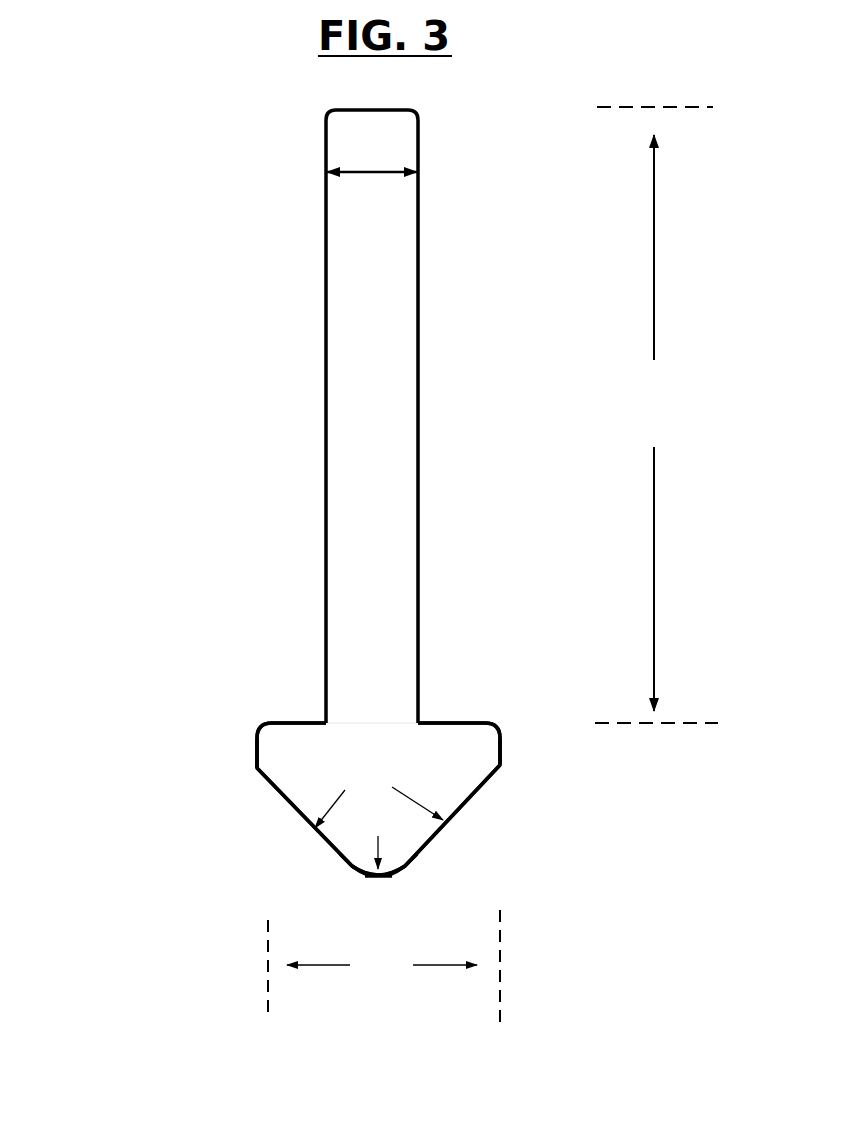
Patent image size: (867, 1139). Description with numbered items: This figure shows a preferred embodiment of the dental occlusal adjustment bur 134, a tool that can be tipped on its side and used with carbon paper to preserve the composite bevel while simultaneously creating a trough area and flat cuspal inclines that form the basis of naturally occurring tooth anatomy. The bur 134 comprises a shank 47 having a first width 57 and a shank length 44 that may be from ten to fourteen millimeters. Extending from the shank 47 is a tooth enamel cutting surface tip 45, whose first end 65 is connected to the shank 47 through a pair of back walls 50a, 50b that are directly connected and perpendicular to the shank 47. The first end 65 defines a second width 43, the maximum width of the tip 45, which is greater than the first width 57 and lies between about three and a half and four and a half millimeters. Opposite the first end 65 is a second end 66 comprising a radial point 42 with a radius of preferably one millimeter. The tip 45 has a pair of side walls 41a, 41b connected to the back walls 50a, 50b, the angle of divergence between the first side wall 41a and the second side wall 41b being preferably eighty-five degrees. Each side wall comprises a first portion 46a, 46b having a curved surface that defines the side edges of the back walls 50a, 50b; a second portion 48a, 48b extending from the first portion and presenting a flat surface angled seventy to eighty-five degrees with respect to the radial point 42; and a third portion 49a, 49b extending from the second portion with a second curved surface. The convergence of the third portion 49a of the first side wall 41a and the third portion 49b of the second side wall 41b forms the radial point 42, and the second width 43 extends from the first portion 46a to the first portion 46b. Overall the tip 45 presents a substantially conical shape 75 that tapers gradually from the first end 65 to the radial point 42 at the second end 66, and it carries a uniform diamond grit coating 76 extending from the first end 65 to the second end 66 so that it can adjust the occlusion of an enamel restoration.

The occlusal adjustment bur 134 is at (384, 566).
The shank 47 is at (348, 483).
The first width 57 is at (372, 154).
The shank length 44 is at (656, 415).
The second width 43 is at (384, 967).
The first end 65 is at (382, 712).
The back wall 50a is at (305, 718).
The back wall 50b is at (443, 723).
The first portion 46a is at (255, 740).
The first portion 46b is at (500, 738).
The second portion 48a is at (278, 808).
The second portion 48b is at (477, 792).
The third portion 49a is at (350, 872).
The third portion 49b is at (403, 870).
The tooth enamel cutting surface tip 45 is at (417, 832).
The substantially conical shape 75 is at (254, 782).
The second end 66 is at (402, 888).
The uniform diamond grit coating 76 is at (480, 771).
The first side wall 41a is at (325, 793).
The second side wall 41b is at (411, 787).
The radial point 42 is at (377, 834).